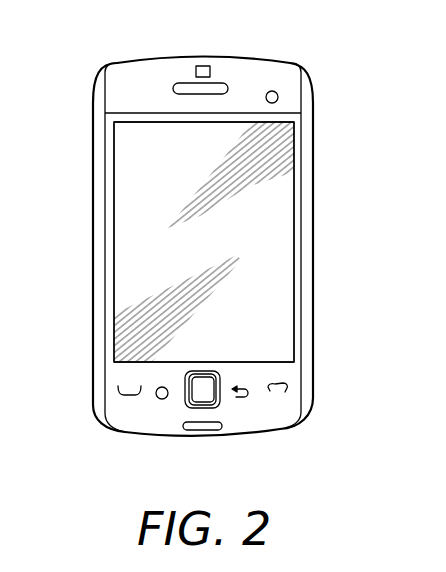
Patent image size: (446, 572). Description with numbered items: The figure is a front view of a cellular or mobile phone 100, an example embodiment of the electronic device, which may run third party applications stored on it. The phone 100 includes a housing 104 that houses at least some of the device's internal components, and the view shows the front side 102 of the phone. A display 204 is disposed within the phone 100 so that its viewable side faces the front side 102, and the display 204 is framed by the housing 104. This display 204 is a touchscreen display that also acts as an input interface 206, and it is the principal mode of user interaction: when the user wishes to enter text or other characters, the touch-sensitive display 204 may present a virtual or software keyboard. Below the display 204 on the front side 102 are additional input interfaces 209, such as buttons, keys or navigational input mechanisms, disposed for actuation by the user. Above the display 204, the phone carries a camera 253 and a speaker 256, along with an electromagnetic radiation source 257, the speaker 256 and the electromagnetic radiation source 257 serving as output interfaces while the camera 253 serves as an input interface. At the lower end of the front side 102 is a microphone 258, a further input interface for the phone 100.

The phone 100 is at (81, 52).
The front side 102 is at (114, 376).
The housing 104 is at (313, 133).
The display 204 is at (114, 182).
The input interface 206 is at (114, 268).
The input interfaces 209 is at (278, 393).
The camera 253 is at (200, 66).
The speaker 256 is at (225, 83).
The electromagnetic radiation source 257 is at (278, 97).
The microphone 258 is at (200, 431).